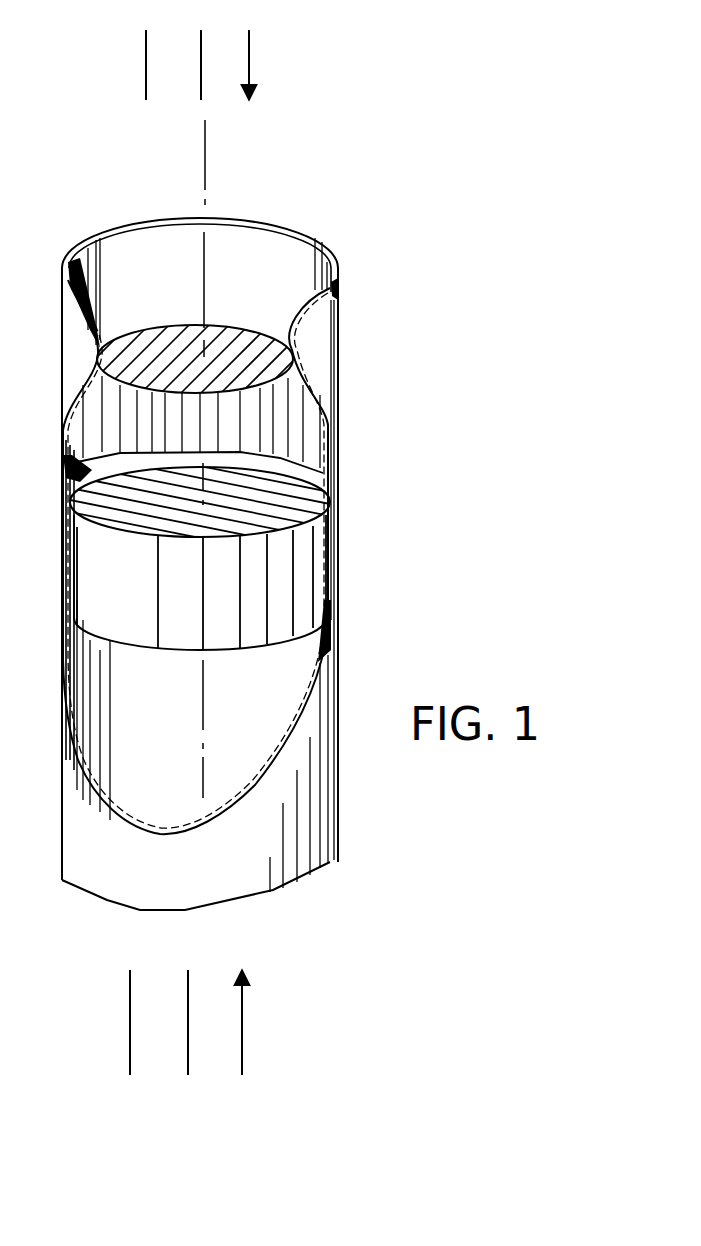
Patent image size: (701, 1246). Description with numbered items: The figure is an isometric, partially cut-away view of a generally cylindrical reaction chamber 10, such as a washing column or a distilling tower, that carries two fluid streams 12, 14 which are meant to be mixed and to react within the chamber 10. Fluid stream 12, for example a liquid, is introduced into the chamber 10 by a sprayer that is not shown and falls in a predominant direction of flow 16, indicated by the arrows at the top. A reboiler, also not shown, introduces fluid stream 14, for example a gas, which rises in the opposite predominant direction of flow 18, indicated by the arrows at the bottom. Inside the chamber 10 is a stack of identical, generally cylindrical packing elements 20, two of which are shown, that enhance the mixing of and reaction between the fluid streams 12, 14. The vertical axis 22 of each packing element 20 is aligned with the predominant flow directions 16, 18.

The reaction chamber 10 is at (352, 218).
The fluid stream 12 is at (168, 287).
The fluid stream 14 is at (172, 721).
The predominant direction of flow 16 is at (260, 60).
The predominant direction of flow 18 is at (252, 1070).
The packing element 20 is at (220, 312).
The vertical axis 22 is at (205, 155).